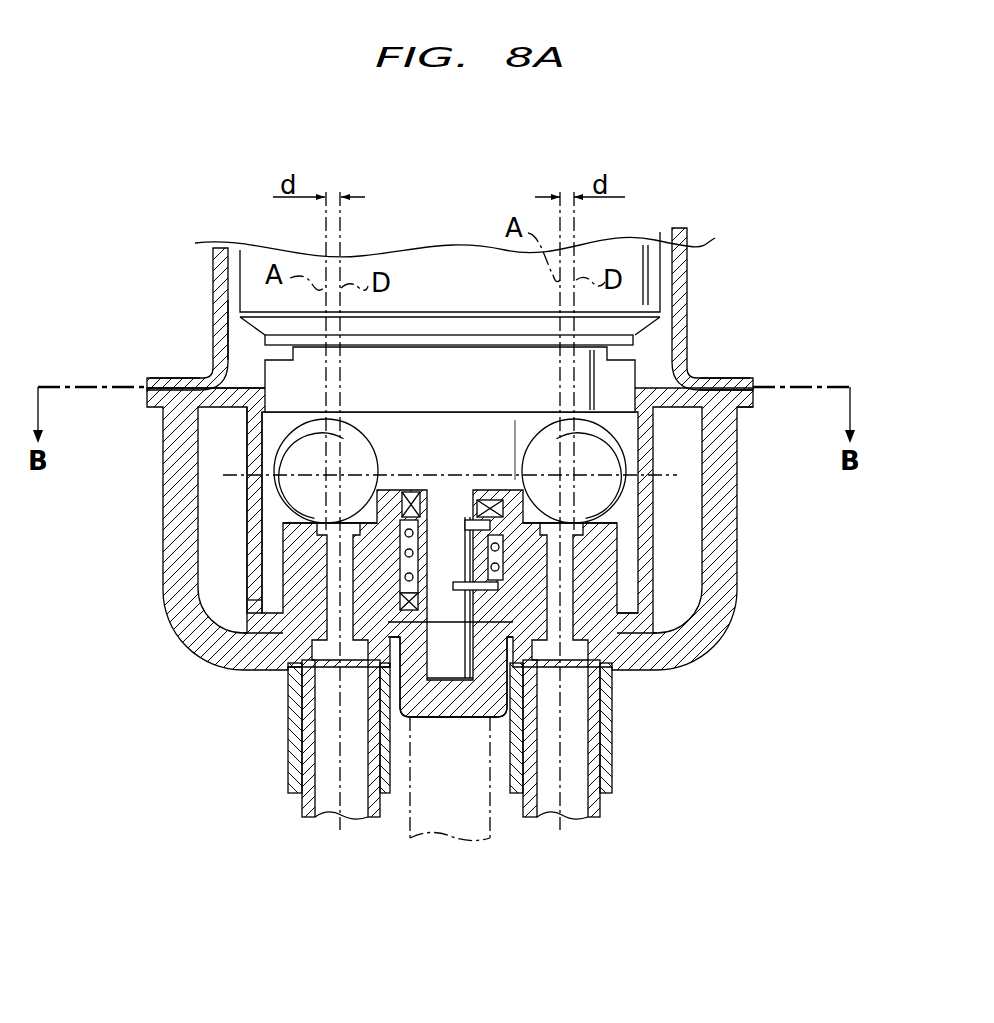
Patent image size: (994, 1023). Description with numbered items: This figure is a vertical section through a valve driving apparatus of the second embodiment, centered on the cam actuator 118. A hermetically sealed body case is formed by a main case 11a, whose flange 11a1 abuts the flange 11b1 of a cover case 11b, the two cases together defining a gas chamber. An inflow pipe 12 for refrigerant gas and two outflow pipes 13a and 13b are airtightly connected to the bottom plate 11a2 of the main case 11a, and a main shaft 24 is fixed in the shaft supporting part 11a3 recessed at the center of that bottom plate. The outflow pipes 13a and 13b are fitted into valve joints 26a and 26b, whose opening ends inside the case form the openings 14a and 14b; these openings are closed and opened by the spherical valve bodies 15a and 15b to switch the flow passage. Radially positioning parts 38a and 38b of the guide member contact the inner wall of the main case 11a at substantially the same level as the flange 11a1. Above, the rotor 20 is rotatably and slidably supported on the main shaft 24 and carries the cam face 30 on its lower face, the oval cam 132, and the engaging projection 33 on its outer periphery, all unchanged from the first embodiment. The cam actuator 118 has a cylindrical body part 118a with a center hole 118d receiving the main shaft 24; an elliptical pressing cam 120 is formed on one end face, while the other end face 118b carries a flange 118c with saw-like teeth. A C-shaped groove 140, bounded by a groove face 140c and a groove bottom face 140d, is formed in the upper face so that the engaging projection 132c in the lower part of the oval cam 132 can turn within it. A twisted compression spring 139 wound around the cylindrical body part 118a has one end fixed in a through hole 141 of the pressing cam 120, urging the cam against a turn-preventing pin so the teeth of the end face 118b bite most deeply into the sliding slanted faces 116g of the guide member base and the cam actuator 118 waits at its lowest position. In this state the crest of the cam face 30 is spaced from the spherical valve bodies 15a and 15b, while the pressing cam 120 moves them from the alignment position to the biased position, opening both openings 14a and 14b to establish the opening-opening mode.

The main case 11a is at (738, 512).
The flange of the main case 11a1 is at (750, 405).
The bottom plate of the main case 11a2 is at (640, 668).
The shaft supporting part 11a3 is at (450, 718).
The cover case 11b is at (687, 270).
The flange of the cover case 11b1 is at (722, 388).
The inflow pipe 12 is at (500, 832).
The outflow pipe 13a is at (302, 805).
The outflow pipe 13b is at (600, 806).
The opening 14a is at (328, 548).
The opening 14b is at (585, 530).
The spherical valve body 15a is at (152, 388).
The spherical valve body 15b is at (622, 452).
The rotor 20 is at (213, 273).
The main shaft 24 is at (298, 667).
The valve joint 26a is at (289, 740).
The valve joint 26b is at (612, 766).
The cam face 30 is at (283, 458).
The engaging projection 33 is at (213, 352).
The radially positioning part 38a is at (210, 376).
The radially positioning part 38b is at (676, 362).
The sliding slanted faces 116g is at (668, 668).
The cam actuator 118 is at (655, 585).
The cylindrical body part 118a is at (648, 655).
The end face with teeth 118b is at (288, 632).
The flange 118c is at (695, 650).
The center hole 118d is at (378, 417).
The pressing cam 120 is at (300, 586).
The oval cam 132 is at (258, 485).
The engaging projection 132c is at (258, 518).
The twisted compression spring 139 is at (403, 558).
The C-shaped groove 140 is at (467, 516).
The groove face 140c is at (487, 479).
The groove bottom face 140d is at (430, 490).
The through hole 141 is at (513, 481).